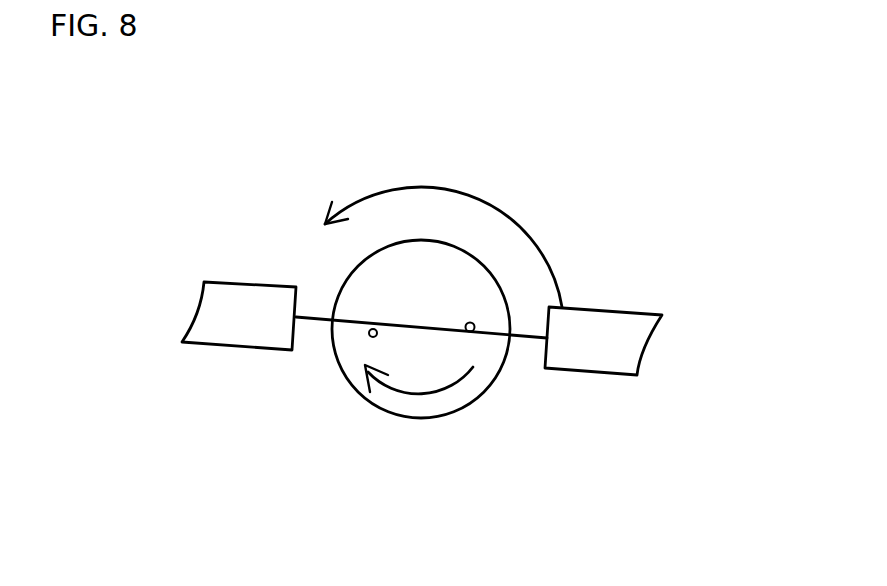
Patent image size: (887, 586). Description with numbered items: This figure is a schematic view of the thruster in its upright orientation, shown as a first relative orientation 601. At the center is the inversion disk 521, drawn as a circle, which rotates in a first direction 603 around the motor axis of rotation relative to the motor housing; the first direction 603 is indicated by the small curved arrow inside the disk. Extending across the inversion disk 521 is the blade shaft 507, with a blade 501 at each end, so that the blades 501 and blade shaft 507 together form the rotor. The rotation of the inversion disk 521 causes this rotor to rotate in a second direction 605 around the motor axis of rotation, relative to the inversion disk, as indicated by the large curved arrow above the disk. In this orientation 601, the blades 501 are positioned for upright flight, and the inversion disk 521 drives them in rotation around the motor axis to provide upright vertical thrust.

The blades 501 is at (605, 340).
The blade shaft 507 is at (317, 322).
The inversion disk 521 is at (482, 395).
The first relative orientation 601 is at (600, 123).
The first direction 603 is at (417, 395).
The second direction 605 is at (413, 185).